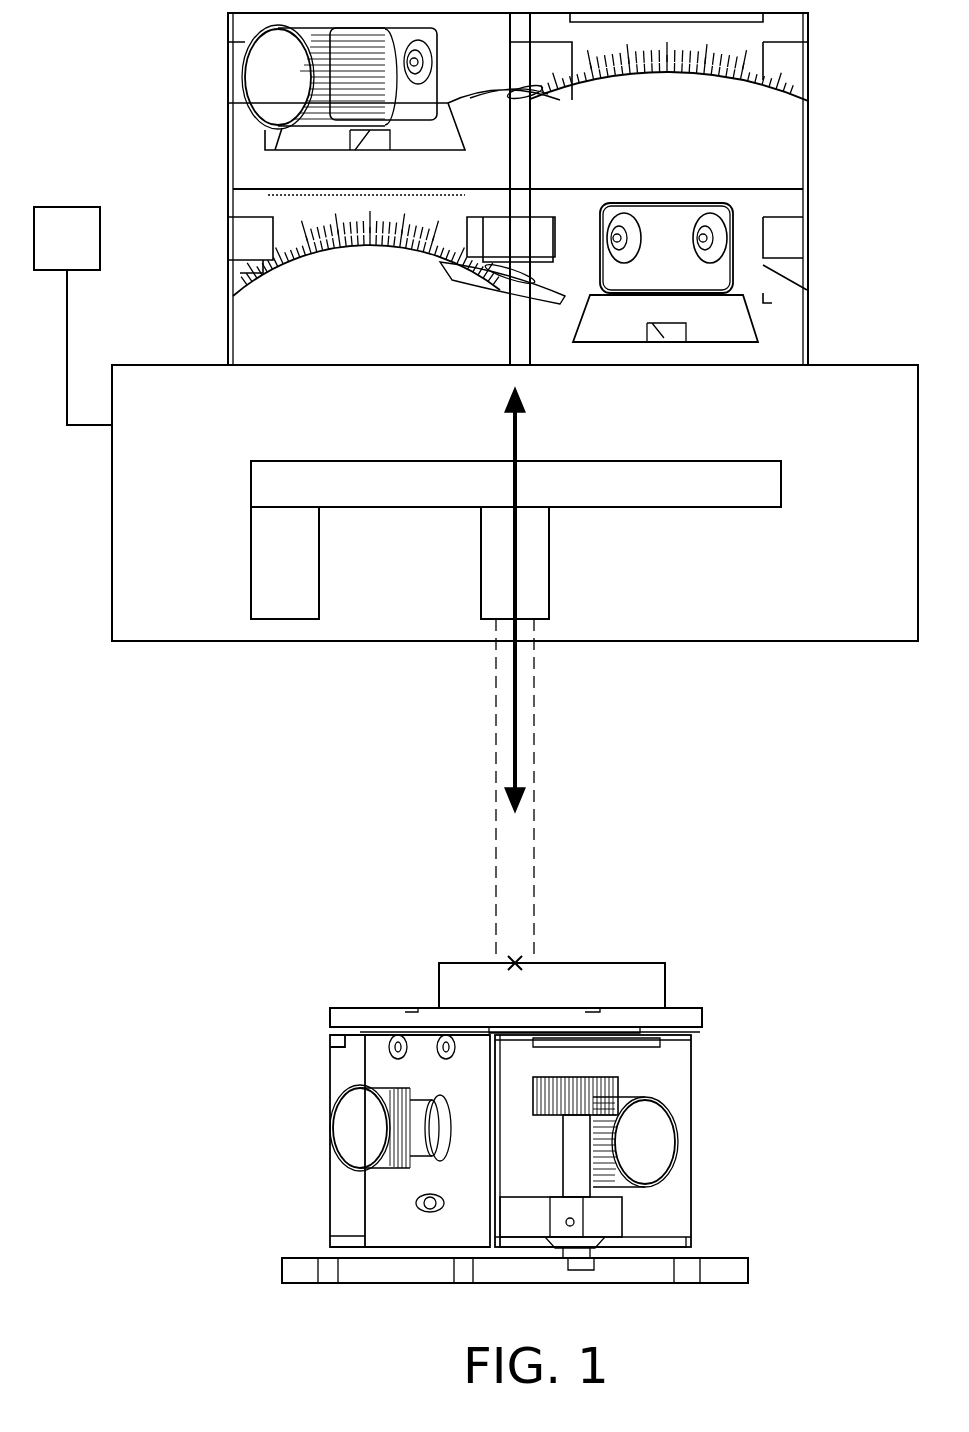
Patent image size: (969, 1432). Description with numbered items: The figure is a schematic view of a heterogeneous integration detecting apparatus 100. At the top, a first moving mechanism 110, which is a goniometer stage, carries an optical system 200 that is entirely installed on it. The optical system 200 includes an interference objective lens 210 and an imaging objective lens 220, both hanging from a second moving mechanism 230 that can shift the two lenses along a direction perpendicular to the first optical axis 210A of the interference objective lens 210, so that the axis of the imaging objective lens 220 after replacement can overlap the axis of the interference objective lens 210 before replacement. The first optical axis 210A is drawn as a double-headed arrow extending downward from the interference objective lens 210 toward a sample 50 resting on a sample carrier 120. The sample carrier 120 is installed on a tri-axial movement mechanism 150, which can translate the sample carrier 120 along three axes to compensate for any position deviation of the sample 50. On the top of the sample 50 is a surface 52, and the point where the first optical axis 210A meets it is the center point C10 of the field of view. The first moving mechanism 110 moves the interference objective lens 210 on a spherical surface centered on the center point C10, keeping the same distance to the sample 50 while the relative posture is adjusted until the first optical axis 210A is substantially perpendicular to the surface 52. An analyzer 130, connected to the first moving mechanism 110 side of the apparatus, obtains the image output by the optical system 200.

The heterogeneous integration detecting apparatus 100 is at (561, 1108).
The first moving mechanism 110 is at (810, 150).
The sample carrier 120 is at (703, 1015).
The analyzer 130 is at (67, 207).
The tri-axial movement mechanism 150 is at (691, 1210).
The optical system 200 is at (515, 662).
The interference objective lens 210 is at (549, 563).
The first optical axis 210A is at (517, 705).
The imaging objective lens 220 is at (319, 563).
The second moving mechanism 230 is at (732, 507).
The sample 50 is at (665, 985).
The surface 52 is at (619, 961).
The center point C10 is at (519, 957).